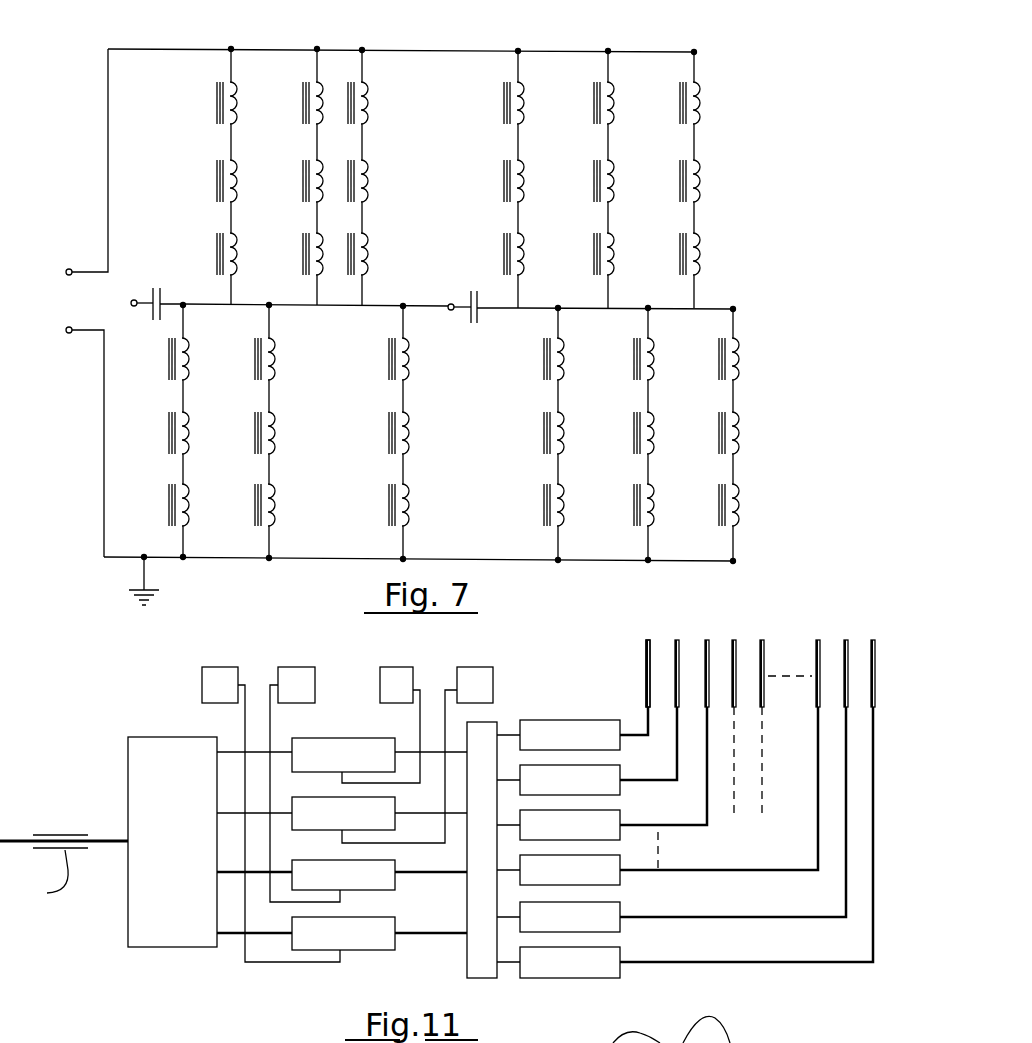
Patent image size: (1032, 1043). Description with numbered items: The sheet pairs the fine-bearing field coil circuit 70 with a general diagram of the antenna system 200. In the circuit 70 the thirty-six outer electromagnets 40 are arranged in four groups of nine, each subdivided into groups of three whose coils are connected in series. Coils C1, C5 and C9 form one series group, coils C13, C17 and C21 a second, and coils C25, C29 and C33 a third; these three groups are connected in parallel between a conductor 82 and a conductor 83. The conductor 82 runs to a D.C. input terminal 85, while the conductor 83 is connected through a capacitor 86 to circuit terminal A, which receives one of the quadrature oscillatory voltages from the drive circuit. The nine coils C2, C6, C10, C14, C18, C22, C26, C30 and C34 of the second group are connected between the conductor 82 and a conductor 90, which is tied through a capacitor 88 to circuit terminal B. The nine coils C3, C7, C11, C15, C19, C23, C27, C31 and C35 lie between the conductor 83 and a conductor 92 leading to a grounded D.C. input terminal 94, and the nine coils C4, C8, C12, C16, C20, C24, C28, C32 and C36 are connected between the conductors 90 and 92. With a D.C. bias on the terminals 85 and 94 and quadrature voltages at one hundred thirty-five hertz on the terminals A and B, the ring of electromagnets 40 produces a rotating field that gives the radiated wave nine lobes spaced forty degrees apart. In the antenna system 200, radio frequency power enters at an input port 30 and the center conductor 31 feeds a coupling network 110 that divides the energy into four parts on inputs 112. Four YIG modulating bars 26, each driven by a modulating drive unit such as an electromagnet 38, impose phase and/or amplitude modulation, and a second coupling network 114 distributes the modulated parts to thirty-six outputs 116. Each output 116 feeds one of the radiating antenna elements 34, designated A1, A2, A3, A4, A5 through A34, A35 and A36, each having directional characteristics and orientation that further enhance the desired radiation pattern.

In FIG. 7, the conductor 82 is at (178, 49).
In FIG. 7, the electromagnet 40 is at (350, 82).
In FIG. 7, the D.C. input terminal 85 is at (70, 268).
In FIG. 7, the grounded D.C. input terminal 94 is at (72, 334).
In FIG. 7, the conductor 92 is at (221, 558).
In FIG. 7, the circuit terminal A is at (132, 300).
In FIG. 7, the circuit terminal B is at (450, 304).
In FIG. 7, the capacitor 86 is at (151, 314).
In FIG. 7, the capacitor 88 is at (478, 313).
In FIG. 7, the conductor 83 is at (373, 305).
In FIG. 7, the conductor 90 is at (668, 308).
In FIG. 7, the circuit 70 is at (755, 518).
In FIG. 7, the coil C1 is at (236, 88).
In FIG. 7, the coil C2 is at (523, 88).
In FIG. 7, the coil C3 is at (188, 344).
In FIG. 7, the coil C4 is at (563, 344).
In FIG. 7, the coil C5 is at (236, 166).
In FIG. 7, the coil C6 is at (523, 166).
In FIG. 7, the coil C7 is at (188, 418).
In FIG. 7, the coil C8 is at (563, 418).
In FIG. 7, the coil C9 is at (236, 239).
In FIG. 7, the coil C10 is at (523, 239).
In FIG. 7, the coil C11 is at (188, 490).
In FIG. 7, the coil C12 is at (563, 490).
In FIG. 7, the coil C13 is at (312, 86).
In FIG. 7, the coil C14 is at (613, 88).
In FIG. 7, the coil C15 is at (274, 344).
In FIG. 7, the coil C16 is at (653, 344).
In FIG. 7, the coil C17 is at (312, 164).
In FIG. 7, the coil C18 is at (613, 166).
In FIG. 7, the coil C19 is at (274, 418).
In FIG. 7, the coil C20 is at (653, 418).
In FIG. 7, the coil C21 is at (312, 237).
In FIG. 7, the coil C22 is at (613, 239).
In FIG. 7, the coil C23 is at (274, 490).
In FIG. 7, the coil C24 is at (653, 490).
In FIG. 7, the coil C25 is at (367, 88).
In FIG. 7, the coil C26 is at (699, 88).
In FIG. 7, the coil C27 is at (408, 344).
In FIG. 7, the coil C28 is at (738, 344).
In FIG. 7, the coil C29 is at (367, 166).
In FIG. 7, the coil C30 is at (699, 166).
In FIG. 7, the coil C31 is at (408, 418).
In FIG. 7, the coil C32 is at (738, 418).
In FIG. 7, the coil C33 is at (367, 239).
In FIG. 7, the coil C34 is at (699, 239).
In FIG. 7, the coil C35 is at (408, 490).
In FIG. 7, the coil C36 is at (738, 490).
In FIG. 11, the input port 30 is at (48, 834).
In FIG. 11, the center conductor 31 is at (102, 840).
In FIG. 11, the coupling network 110 is at (128, 757).
In FIG. 11, the antenna system 200 is at (112, 946).
In FIG. 11, the electromagnet 38 is at (202, 690).
In FIG. 11, the inputs 112 is at (232, 935).
In FIG. 11, the YIG bar 26 is at (388, 950).
In FIG. 11, the second coupling network 114 is at (488, 978).
In FIG. 11, the outputs 116 is at (795, 966).
In FIG. 11, the antenna element 34 is at (646, 670).
In FIG. 11, the antenna element A1 is at (646, 645).
In FIG. 11, the antenna element A2 is at (675, 644).
In FIG. 11, the antenna element A3 is at (706, 644).
In FIG. 11, the antenna element A4 is at (734, 644).
In FIG. 11, the antenna element A5 is at (761, 644).
In FIG. 11, the antenna element A34 is at (818, 644).
In FIG. 11, the antenna element A35 is at (846, 644).
In FIG. 11, the antenna element A36 is at (873, 644).